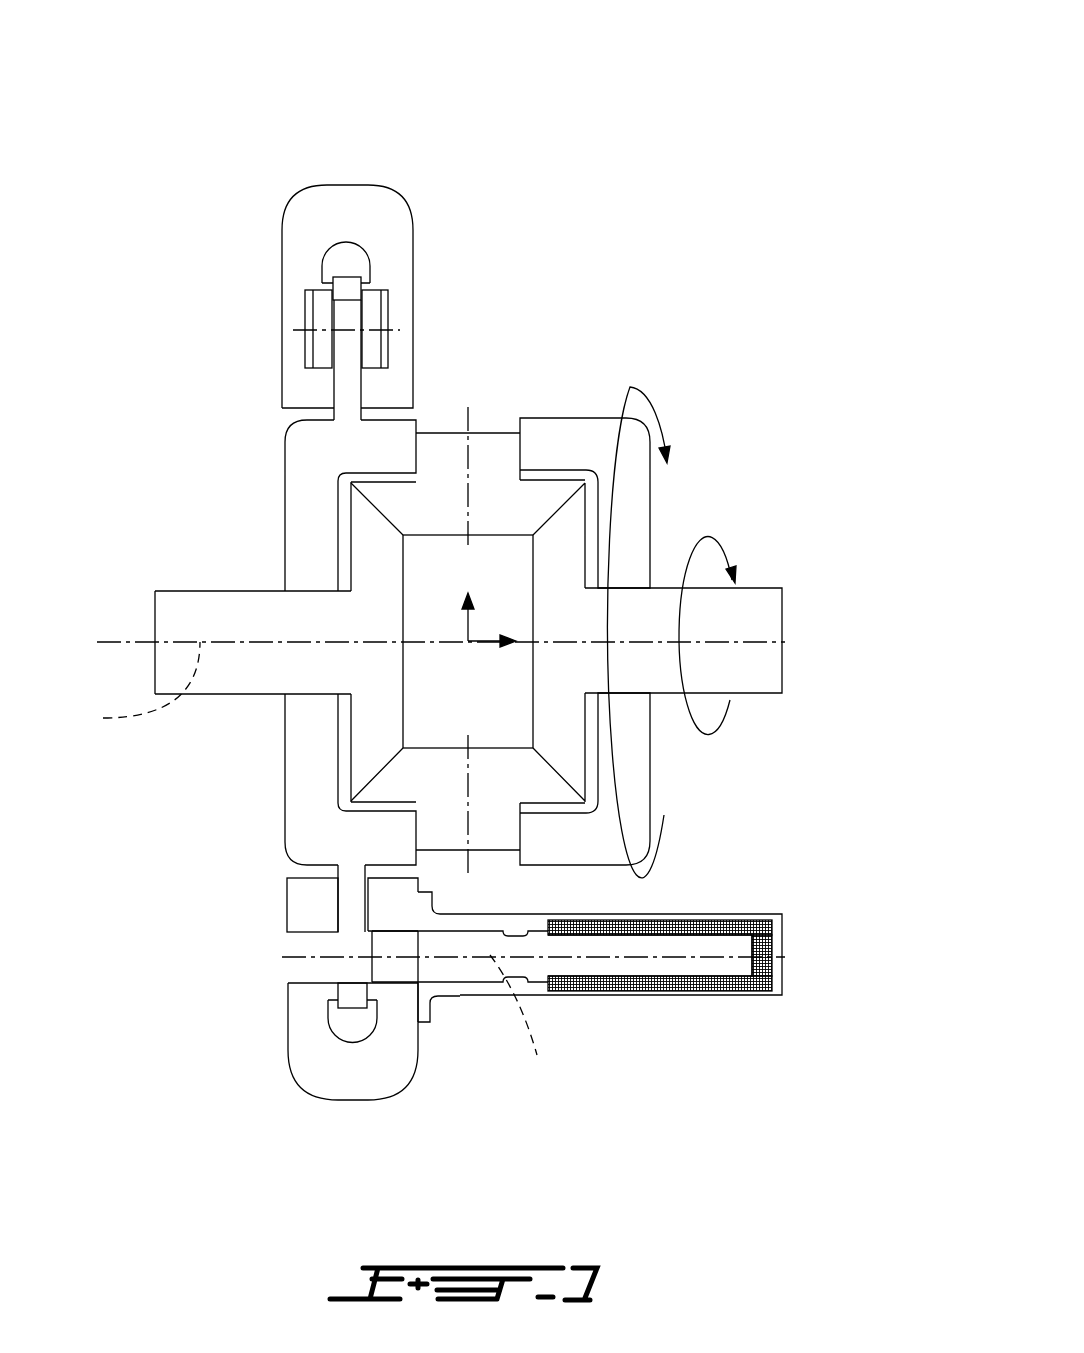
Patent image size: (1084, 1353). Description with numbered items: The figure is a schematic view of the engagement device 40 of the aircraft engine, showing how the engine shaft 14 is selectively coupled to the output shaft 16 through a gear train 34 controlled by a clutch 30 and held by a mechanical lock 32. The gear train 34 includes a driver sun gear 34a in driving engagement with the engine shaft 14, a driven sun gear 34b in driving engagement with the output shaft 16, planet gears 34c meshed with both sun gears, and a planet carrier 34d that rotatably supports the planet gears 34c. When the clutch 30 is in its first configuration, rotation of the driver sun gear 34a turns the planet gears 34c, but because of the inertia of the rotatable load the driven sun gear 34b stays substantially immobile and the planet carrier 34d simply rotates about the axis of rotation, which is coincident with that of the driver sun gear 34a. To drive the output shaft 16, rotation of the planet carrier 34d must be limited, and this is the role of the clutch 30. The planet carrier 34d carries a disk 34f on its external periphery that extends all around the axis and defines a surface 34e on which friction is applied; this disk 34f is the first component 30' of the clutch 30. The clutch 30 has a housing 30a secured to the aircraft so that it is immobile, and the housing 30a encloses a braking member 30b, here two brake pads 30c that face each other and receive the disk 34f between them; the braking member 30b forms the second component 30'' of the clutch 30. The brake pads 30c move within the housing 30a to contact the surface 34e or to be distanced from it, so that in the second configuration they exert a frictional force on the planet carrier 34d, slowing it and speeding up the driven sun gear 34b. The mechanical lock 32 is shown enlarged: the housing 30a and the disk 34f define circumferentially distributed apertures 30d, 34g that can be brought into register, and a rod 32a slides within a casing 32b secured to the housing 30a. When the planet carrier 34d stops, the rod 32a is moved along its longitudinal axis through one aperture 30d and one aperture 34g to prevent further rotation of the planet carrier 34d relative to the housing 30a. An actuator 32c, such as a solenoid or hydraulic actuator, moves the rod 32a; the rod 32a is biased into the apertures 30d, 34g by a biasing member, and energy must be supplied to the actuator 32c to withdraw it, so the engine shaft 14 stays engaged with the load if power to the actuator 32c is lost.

The engine shaft 14 is at (782, 620).
The output shaft 16 is at (168, 600).
The clutch 30 is at (435, 579).
The first component 30' is at (315, 1069).
The second component 30'' is at (232, 558).
The housing 30a is at (287, 1000).
The braking member 30b is at (349, 558).
The brake pads 30c is at (315, 305).
The apertures 30d is at (392, 985).
The mechanical lock 32 is at (665, 1025).
The rod 32a is at (643, 947).
The casing 32b is at (745, 996).
The actuator 32c is at (748, 922).
The gear train 34 is at (567, 365).
The driver sun gear 34a is at (563, 562).
The driven sun gear 34b is at (378, 730).
The planet gears 34c is at (490, 823).
The planet carrier 34d is at (627, 482).
The surface 34e is at (320, 900).
The disk 34f is at (352, 995).
The apertures 34g is at (366, 988).
The engagement device 40 is at (878, 237).